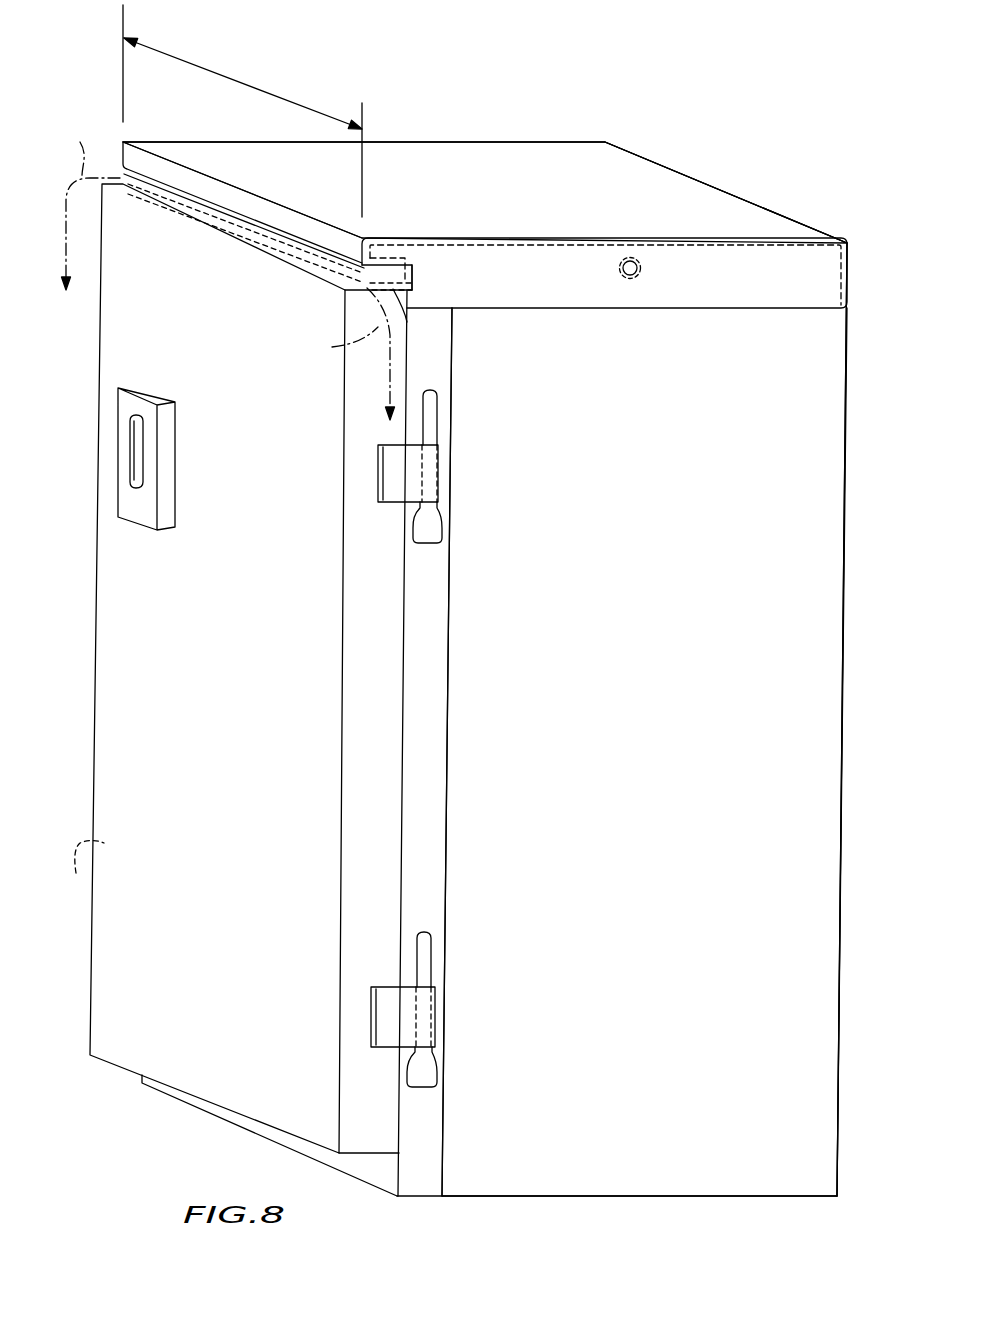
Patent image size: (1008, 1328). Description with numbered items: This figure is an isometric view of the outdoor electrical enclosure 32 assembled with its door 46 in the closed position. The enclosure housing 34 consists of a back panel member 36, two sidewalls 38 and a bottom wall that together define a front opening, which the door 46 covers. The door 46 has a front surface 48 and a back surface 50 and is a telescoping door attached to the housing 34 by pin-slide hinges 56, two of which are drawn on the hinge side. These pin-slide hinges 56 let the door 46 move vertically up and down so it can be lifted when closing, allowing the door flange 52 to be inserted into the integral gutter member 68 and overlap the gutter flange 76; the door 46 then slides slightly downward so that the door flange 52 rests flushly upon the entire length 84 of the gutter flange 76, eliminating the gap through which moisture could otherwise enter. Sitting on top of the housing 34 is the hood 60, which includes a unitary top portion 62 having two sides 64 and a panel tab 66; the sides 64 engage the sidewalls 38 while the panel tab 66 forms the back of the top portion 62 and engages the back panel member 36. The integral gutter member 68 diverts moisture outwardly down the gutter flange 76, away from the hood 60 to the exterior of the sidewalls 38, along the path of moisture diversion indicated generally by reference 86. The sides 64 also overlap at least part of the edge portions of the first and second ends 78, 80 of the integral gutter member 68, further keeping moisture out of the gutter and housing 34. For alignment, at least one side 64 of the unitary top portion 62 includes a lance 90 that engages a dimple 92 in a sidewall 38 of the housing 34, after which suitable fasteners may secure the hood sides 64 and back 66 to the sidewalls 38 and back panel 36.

The outdoor electrical enclosure 32 is at (580, 1259).
The housing 34 is at (822, 695).
The panel member 36 is at (848, 437).
The sidewalls 38 is at (777, 1154).
The door 46 is at (264, 1014).
The front surface 48 is at (133, 1047).
The back surface 50 is at (76, 873).
The door flange 52 is at (408, 322).
The pin-slide hinges 56 is at (378, 470).
The hood 60 is at (585, 127).
The unitary top portion 62 is at (490, 163).
The sides 64 is at (430, 140).
The panel tab 66 is at (715, 190).
The integral gutter member 68 is at (150, 215).
The gutter flange 76 is at (335, 284).
The first end 78 is at (418, 278).
The second end 80 is at (108, 112).
The entire length 84 is at (215, 66).
The path of moisture diversion 86 is at (228, 268).
The lance 90 is at (636, 260).
The dimple 92 is at (372, 252).